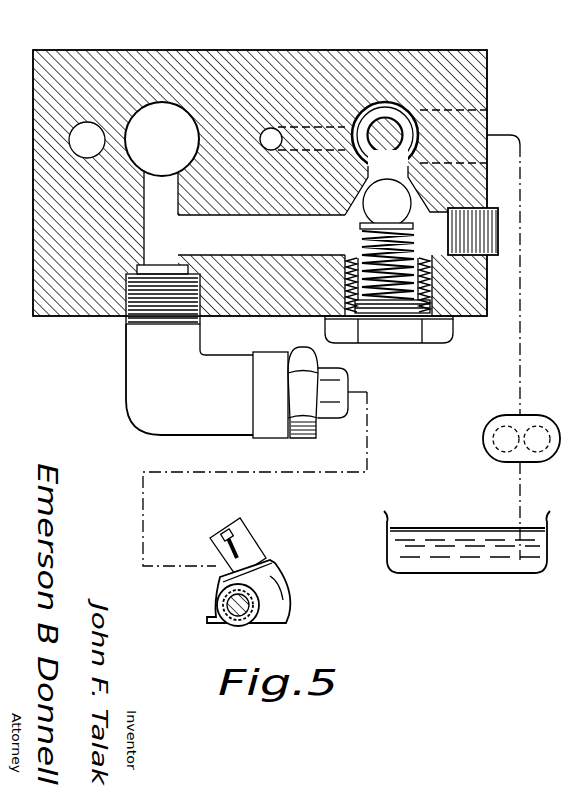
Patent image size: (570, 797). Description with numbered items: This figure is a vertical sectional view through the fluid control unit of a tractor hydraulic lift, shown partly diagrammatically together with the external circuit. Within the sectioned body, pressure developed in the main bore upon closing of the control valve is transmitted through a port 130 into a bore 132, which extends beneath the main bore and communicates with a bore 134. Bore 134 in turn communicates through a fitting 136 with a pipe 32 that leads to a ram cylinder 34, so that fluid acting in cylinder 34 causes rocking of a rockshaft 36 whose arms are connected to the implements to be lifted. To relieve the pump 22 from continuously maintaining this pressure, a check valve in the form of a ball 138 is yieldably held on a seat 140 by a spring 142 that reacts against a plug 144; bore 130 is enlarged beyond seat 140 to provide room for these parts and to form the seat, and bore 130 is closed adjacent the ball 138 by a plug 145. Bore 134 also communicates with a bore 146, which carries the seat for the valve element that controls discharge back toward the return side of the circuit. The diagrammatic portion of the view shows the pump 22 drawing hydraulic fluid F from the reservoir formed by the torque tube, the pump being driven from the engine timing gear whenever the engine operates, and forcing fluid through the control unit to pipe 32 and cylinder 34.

The bore 146 is at (127, 138).
The bore 134 is at (160, 195).
The bore 132 is at (268, 215).
The port 130 is at (340, 200).
The ball 138 is at (322, 220).
The seat 140 is at (413, 207).
The spring 142 is at (360, 247).
The plug 145 is at (483, 242).
The plug 144 is at (381, 330).
The fitting 136 is at (188, 343).
The ram cylinder 34 is at (210, 540).
The pipe 32 is at (192, 567).
The rockshaft 36 is at (222, 604).
The pump 22 is at (505, 462).
The hydraulic fluid F is at (458, 547).